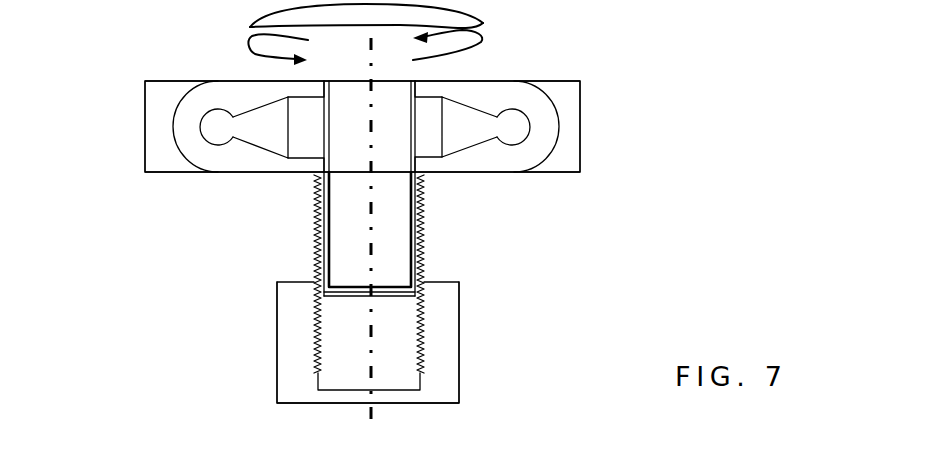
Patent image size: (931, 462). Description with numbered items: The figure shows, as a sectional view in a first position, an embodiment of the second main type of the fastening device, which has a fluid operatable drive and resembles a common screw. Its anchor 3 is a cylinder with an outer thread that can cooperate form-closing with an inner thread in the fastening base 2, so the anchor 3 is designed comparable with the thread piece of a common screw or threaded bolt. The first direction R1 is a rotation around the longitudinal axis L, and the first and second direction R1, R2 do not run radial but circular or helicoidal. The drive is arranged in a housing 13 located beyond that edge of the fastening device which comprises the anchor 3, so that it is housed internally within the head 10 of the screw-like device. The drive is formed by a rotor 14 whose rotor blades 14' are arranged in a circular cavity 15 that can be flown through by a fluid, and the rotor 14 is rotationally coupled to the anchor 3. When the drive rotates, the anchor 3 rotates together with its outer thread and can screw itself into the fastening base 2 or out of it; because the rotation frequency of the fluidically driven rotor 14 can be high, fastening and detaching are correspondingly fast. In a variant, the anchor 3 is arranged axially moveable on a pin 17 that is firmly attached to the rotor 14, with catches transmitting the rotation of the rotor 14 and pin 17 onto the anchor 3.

The head 10 is at (115, 70).
The housing 13 is at (580, 106).
The rotor 14 is at (167, 126).
The circular cavity 15 is at (191, 136).
The rotor blades 14' is at (305, 148).
The pin 17 is at (341, 220).
The anchor 3 is at (422, 207).
The fastening base 2 is at (460, 336).
The longitudinal axis L is at (372, 250).
The first direction R1 is at (483, 23).
The second direction R2 is at (250, 52).